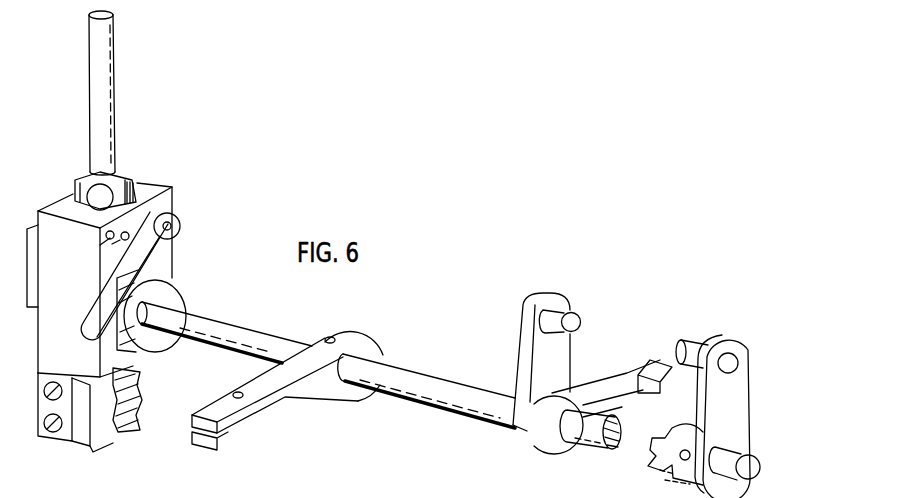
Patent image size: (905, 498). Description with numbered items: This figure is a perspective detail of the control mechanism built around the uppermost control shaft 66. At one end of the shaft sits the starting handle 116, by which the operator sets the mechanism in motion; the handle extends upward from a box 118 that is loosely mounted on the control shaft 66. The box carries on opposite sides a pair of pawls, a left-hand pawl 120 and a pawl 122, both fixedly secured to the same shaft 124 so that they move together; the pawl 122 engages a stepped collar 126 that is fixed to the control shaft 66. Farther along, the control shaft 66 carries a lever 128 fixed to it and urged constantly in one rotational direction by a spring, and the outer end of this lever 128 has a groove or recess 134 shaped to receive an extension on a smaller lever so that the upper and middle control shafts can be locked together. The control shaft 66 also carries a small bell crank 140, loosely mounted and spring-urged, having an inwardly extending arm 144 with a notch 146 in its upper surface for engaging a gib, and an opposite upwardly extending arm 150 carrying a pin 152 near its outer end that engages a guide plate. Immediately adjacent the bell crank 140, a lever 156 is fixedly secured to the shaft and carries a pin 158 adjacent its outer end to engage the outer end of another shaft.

The uppermost control shaft 66 is at (418, 373).
The starting handle 116 is at (107, 102).
The box 118 is at (153, 191).
The left-hand pawl 120 is at (30, 247).
The pawl 122 is at (149, 246).
The shaft 124 is at (171, 224).
The stepped collar 126 is at (178, 296).
The lever 128 is at (285, 400).
The groove or recess 134 is at (193, 448).
The small bell crank 140 is at (533, 447).
The inwardly extending arm 144 is at (620, 406).
The notch 146 is at (643, 368).
The upwardly extending arm 150 is at (532, 357).
The pin 152 is at (572, 323).
The lever 156 is at (741, 418).
The pin 158 is at (687, 347).